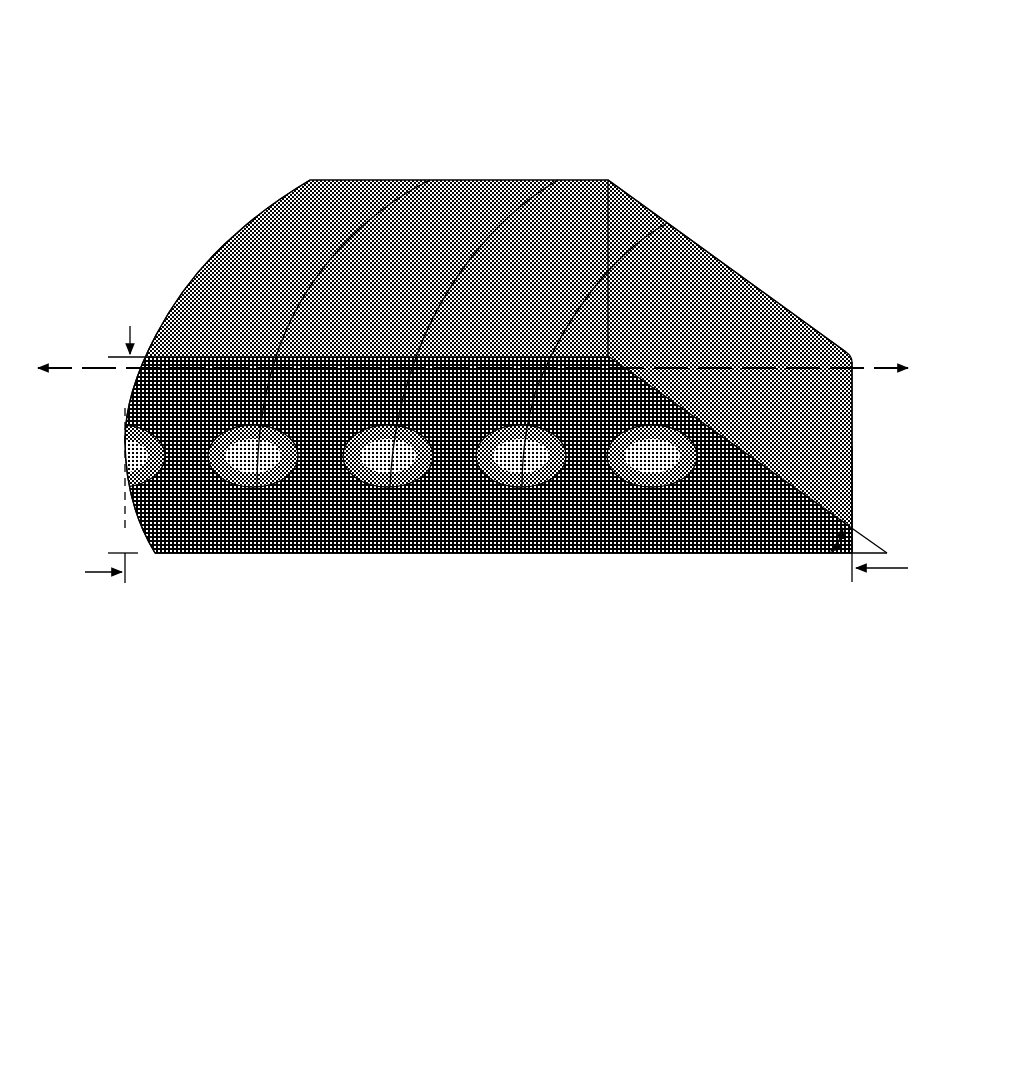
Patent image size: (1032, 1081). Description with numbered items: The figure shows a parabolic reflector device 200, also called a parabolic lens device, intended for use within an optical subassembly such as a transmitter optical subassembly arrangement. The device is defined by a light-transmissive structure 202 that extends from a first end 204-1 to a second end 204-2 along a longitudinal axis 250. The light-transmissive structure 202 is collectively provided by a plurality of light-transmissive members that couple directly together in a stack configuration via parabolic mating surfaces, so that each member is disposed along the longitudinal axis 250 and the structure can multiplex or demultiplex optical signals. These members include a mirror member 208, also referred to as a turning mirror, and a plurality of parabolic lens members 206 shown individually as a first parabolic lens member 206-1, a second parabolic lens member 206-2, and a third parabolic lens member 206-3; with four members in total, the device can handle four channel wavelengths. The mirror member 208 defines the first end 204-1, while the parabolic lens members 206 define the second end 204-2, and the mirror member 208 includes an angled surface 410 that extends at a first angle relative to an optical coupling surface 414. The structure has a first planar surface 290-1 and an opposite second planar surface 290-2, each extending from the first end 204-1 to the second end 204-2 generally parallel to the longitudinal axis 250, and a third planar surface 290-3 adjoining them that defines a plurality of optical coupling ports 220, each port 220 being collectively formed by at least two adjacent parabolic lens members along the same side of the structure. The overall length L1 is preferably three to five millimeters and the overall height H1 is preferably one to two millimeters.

The parabolic reflector device 200 is at (205, 75).
The light-transmissive structure 202 is at (632, 160).
The first end 204-1 is at (812, 300).
The second end 204-2 is at (147, 273).
The plurality of parabolic lens members 206 is at (575, 572).
The first parabolic lens member 206-1 is at (585, 196).
The second parabolic lens member 206-2 is at (440, 196).
The third parabolic lens member 206-3 is at (238, 232).
The mirror member 208 is at (840, 438).
The optical coupling port 220 is at (258, 490).
The longitudinal axis 250 is at (462, 410).
The first planar surface 290-1 is at (317, 197).
The second planar surface 290-2 is at (618, 566).
The third planar surface 290-3 is at (207, 538).
The angled surface 410 is at (720, 268).
The optical coupling surface 414 is at (740, 560).
The overall height H1 is at (130, 330).
The overall length L1 is at (100, 496).